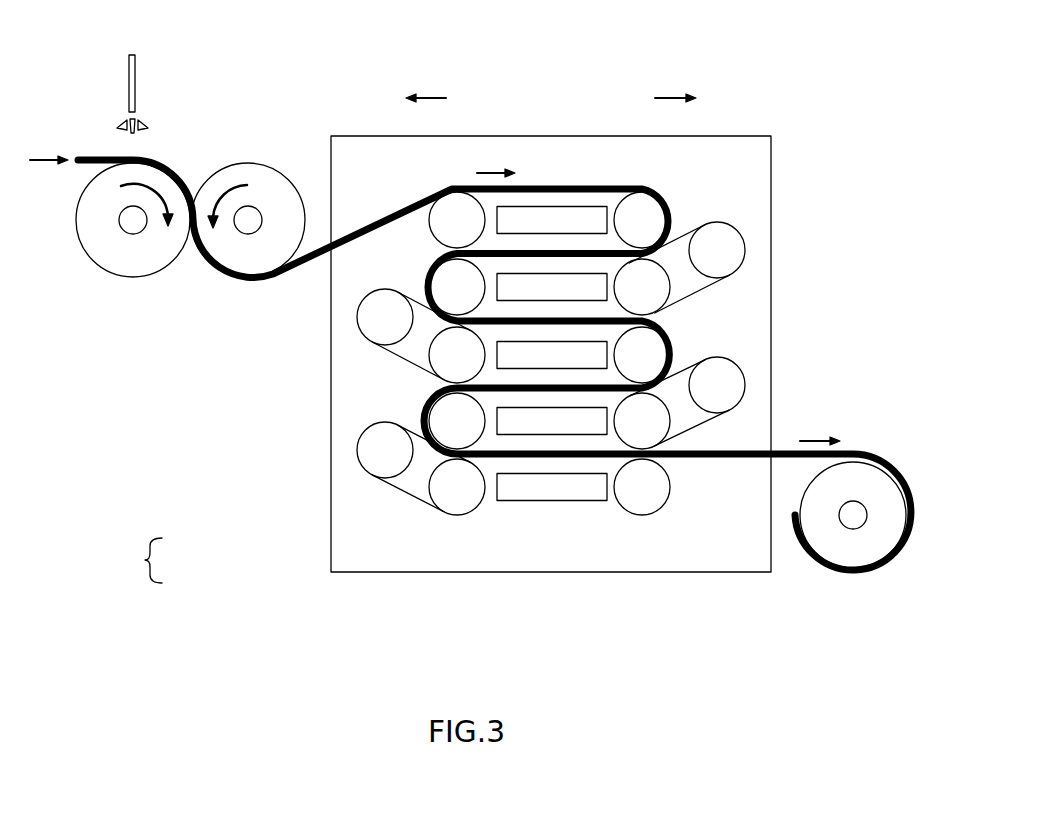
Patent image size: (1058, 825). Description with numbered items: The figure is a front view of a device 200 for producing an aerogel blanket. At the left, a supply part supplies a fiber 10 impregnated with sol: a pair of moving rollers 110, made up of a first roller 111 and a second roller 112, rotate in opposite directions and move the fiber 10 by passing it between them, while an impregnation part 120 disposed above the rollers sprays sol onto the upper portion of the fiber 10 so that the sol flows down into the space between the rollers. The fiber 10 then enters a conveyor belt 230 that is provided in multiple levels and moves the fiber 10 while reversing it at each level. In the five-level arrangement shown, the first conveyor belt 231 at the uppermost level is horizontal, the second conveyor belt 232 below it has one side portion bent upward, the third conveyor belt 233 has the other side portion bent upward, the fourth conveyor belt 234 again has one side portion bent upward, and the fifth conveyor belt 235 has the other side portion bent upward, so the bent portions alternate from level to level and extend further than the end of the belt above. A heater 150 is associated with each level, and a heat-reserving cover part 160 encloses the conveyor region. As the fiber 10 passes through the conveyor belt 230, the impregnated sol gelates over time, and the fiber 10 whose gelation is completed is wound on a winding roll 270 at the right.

The device for producing an aerogel blanket 200 is at (820, 26).
The fiber 10 is at (92, 156).
The impregnation part 120 is at (163, 81).
The pair of moving rollers 110 is at (190, 359).
The first roller 111 is at (133, 258).
The second roller 112 is at (248, 250).
The heat-reserving cover part 160 is at (552, 136).
The heater 150 is at (552, 206).
The conveyor belt 230 is at (635, 349).
The first conveyor belt 231 is at (691, 210).
The second conveyor belt 232 is at (761, 250).
The third conveyor belt 233 is at (691, 338).
The fourth conveyor belt 234 is at (761, 384).
The fifth conveyor belt 235 is at (728, 456).
The winding roll 270 is at (853, 516).